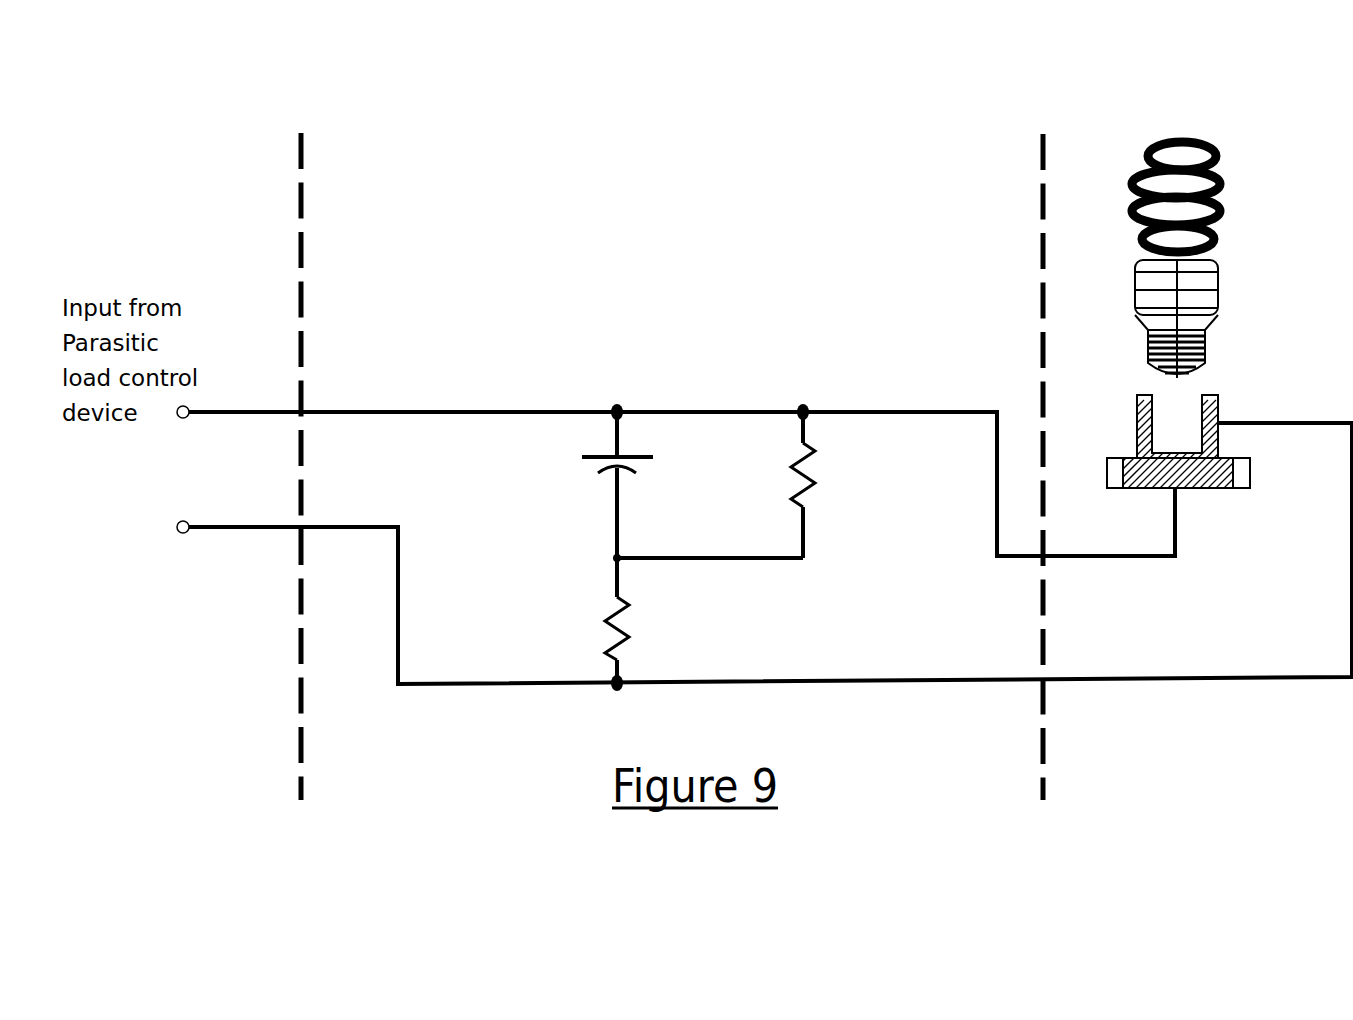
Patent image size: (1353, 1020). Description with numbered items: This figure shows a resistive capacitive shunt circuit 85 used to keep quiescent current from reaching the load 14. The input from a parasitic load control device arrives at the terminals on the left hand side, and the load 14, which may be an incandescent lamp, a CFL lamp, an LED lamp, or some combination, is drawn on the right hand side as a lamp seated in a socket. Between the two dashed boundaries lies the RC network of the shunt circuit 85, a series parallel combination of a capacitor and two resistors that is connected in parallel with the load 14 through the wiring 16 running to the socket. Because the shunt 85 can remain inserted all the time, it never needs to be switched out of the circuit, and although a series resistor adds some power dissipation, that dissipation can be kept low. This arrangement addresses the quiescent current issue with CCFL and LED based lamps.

The resistive capacitive shunt circuit 85 is at (635, 315).
The lamp socket load 16 is at (890, 390).
The load 14 is at (1220, 322).